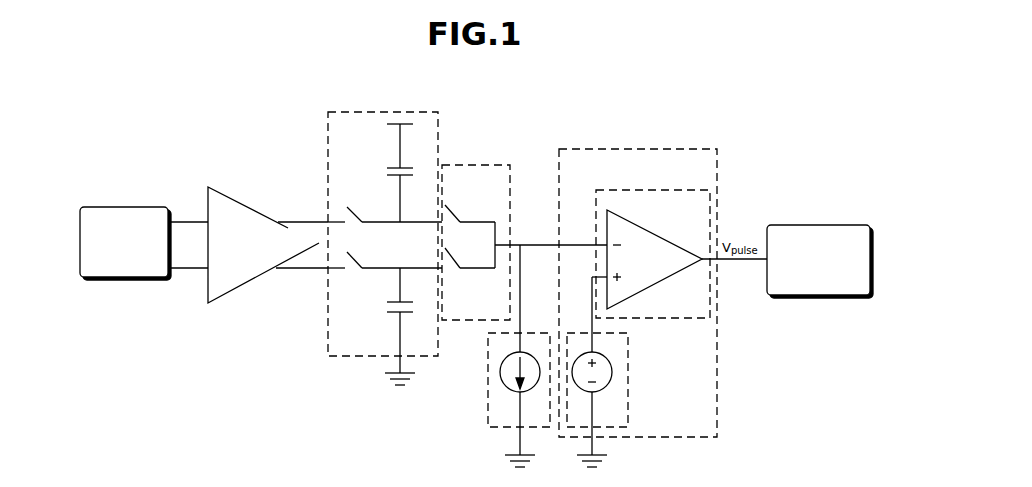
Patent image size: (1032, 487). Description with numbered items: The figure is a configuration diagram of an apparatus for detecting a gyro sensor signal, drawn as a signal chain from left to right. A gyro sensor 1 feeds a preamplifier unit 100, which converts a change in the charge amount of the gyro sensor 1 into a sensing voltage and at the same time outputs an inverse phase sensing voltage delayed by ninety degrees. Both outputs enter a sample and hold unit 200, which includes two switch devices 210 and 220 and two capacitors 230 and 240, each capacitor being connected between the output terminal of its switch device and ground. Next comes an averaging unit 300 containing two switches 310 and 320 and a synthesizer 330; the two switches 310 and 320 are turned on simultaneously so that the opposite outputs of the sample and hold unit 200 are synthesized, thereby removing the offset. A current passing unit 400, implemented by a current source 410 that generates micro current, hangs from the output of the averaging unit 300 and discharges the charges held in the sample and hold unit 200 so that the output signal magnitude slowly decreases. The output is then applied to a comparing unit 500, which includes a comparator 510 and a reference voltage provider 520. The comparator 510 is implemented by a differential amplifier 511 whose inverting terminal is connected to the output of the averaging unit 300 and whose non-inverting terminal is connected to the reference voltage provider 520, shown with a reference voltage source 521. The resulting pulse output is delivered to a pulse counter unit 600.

The gyro sensor 1 is at (125, 207).
The preamplifier unit 100 is at (268, 217).
The sample and hold unit 200 is at (390, 112).
The switch device 210 is at (353, 214).
The switch device 220 is at (355, 262).
The capacitor 230 is at (387, 168).
The capacitor 240 is at (395, 316).
The averaging unit 300 is at (490, 165).
The switch 310 is at (455, 214).
The switch 320 is at (451, 260).
The synthesizer 330 is at (500, 240).
The current passing unit 400 is at (488, 408).
The current source 410 is at (500, 378).
The comparing unit 500 is at (682, 149).
The comparator 510 is at (632, 190).
The differential amplifier 511 is at (655, 235).
The reference voltage provider 520 is at (628, 410).
The reference voltage source 521 is at (612, 372).
The pulse counter unit 600 is at (822, 225).